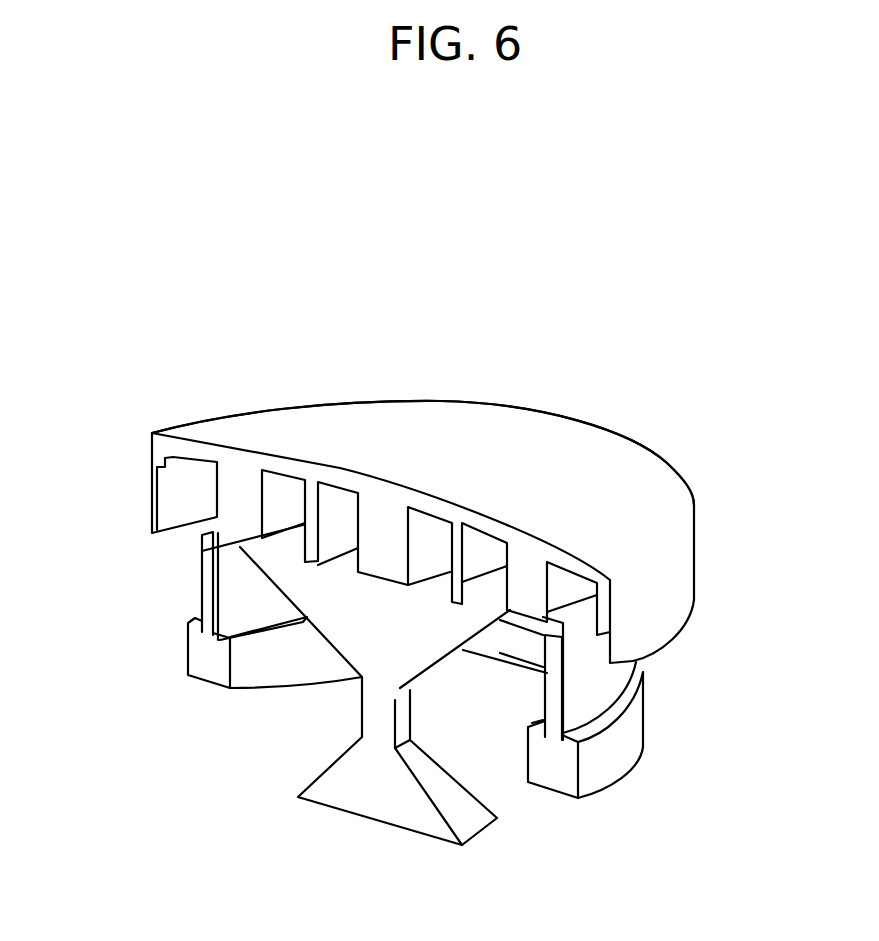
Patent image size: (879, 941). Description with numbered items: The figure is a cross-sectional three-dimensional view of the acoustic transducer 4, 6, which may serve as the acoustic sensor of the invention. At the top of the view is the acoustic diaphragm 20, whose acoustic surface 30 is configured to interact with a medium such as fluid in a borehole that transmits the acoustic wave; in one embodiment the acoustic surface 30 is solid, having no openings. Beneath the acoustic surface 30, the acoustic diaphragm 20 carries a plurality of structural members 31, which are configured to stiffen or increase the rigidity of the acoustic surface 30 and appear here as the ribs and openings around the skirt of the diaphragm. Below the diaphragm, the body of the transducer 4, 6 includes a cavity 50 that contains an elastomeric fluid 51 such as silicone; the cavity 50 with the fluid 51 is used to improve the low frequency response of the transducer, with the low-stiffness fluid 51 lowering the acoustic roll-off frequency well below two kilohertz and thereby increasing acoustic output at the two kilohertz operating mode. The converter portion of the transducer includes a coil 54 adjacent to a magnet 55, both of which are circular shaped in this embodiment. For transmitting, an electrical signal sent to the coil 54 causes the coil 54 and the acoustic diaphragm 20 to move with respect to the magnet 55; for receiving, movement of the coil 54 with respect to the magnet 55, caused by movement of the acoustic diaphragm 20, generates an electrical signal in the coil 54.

The acoustic transducer 4 is at (562, 330).
The acoustic transducer 6 is at (407, 585).
The acoustic diaphragm 20 is at (657, 455).
The acoustic surface 30 is at (342, 415).
The structural members 31 is at (232, 487).
The cavity 50 is at (373, 715).
The elastomeric fluid 51 is at (397, 800).
The coil 54 is at (213, 582).
The magnet 55 is at (208, 655).